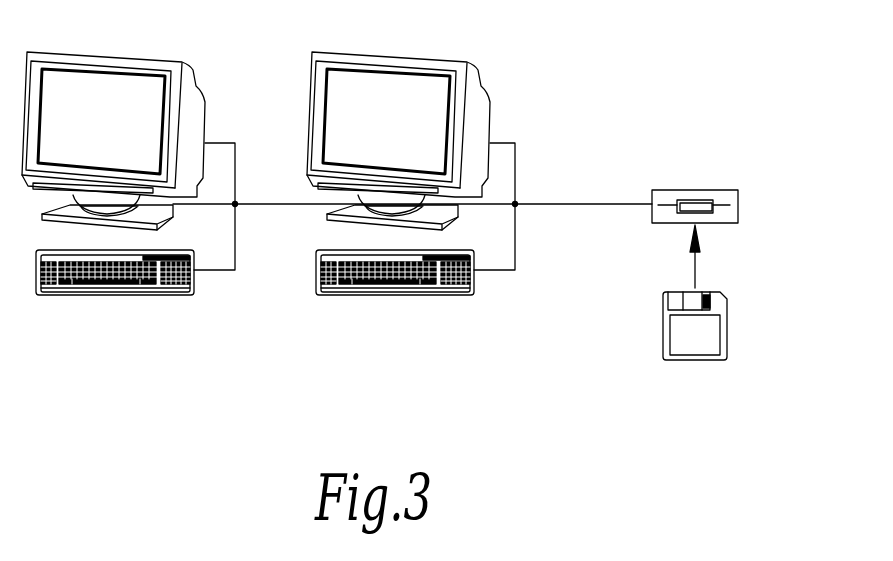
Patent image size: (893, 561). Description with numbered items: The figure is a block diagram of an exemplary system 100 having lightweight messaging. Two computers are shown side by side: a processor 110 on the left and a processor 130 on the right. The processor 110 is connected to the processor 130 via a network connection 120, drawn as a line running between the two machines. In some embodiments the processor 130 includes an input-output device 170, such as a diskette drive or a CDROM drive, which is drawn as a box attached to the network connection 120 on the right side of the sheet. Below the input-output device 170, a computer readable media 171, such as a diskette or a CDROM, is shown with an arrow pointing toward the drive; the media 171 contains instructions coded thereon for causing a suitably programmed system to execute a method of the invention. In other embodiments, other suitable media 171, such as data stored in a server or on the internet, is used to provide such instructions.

The system 100 is at (658, 58).
The processor 110 is at (187, 60).
The network connection 120 is at (263, 204).
The processor 130 is at (468, 63).
The input-output device 170 is at (740, 193).
The computer readable media 171 is at (727, 298).